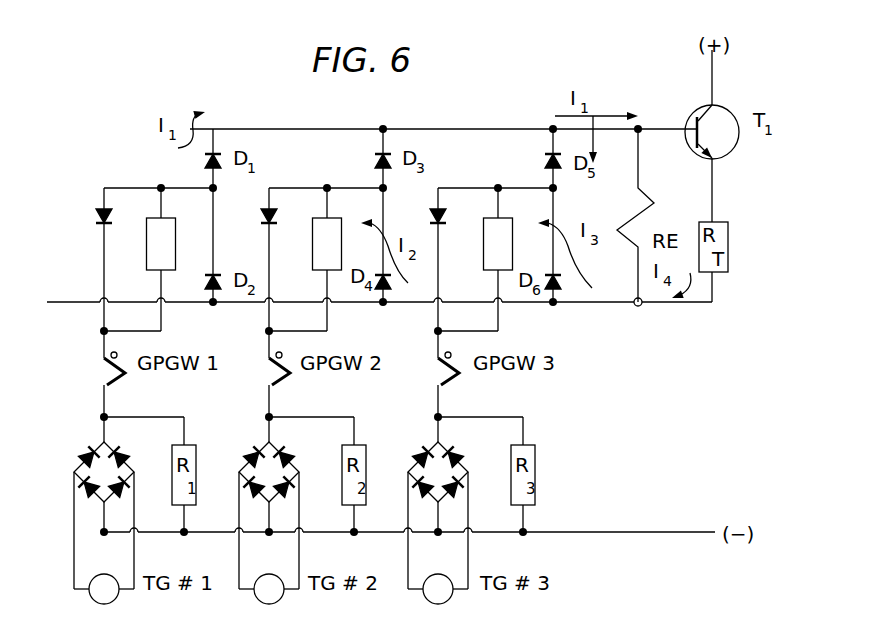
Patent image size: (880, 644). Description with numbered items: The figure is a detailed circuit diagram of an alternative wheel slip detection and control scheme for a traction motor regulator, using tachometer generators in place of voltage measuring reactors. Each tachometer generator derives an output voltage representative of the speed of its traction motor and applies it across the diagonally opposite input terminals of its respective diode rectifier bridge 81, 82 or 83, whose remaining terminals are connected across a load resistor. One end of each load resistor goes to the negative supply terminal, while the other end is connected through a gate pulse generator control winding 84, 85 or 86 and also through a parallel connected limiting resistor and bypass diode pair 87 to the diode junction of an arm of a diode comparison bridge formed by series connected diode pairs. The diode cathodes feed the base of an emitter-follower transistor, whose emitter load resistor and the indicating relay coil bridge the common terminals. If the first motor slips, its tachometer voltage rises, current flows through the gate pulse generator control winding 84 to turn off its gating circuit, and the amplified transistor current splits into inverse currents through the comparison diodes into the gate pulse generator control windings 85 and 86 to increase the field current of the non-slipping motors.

The bridge rectifier 81 is at (95, 442).
The bridge rectifier 82 is at (260, 442).
The bridge rectifier 83 is at (432, 442).
The gate pulse generator control winding 84 is at (115, 380).
The gate pulse generator control winding 85 is at (280, 380).
The gate pulse generator control winding 86 is at (449, 380).
The parallel connected limiting resistor and bypass diode pair 87 is at (152, 254).